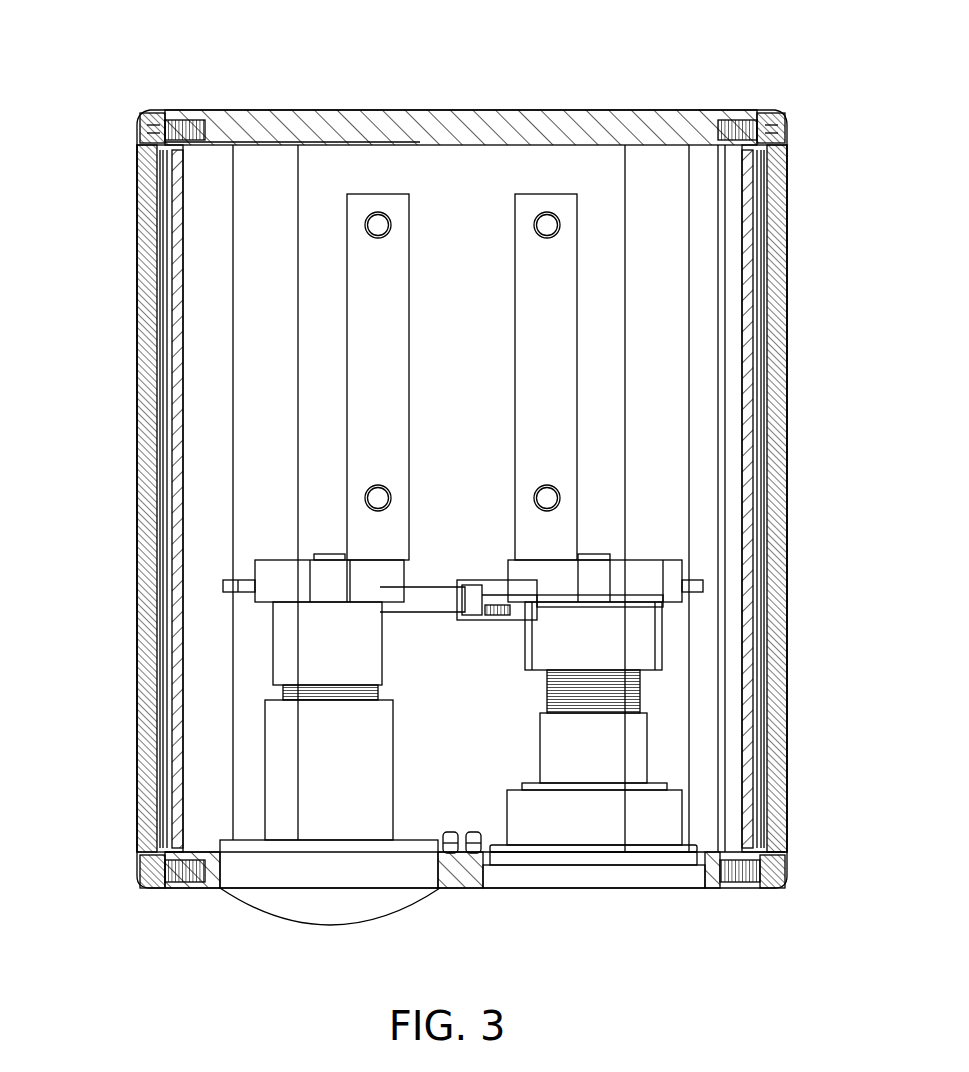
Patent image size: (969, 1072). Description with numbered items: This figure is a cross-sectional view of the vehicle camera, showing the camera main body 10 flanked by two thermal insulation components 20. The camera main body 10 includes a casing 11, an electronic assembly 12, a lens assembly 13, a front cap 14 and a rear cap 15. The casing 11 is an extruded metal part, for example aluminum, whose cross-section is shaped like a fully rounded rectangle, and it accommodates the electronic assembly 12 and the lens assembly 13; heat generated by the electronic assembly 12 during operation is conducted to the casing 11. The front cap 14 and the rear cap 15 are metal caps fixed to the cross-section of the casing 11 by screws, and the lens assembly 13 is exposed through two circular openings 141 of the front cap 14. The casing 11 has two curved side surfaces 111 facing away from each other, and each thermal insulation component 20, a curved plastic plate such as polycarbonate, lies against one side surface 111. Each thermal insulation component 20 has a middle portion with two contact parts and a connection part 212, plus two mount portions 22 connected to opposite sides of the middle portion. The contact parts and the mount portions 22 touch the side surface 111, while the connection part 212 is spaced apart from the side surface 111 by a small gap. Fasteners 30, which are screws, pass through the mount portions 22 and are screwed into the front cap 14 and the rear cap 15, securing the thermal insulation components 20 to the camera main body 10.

The camera main body 10 is at (588, 104).
The casing 11 is at (750, 350).
The side surface 111 is at (164, 466).
The electronic assembly 12 is at (505, 623).
The lens assembly 13 is at (585, 892).
The front cap 14 is at (458, 880).
The circular opening 141 is at (222, 892).
The rear cap 15 is at (500, 118).
The thermal insulation component 20 is at (134, 447).
The connection part 212 is at (147, 493).
The mount portion 22 is at (163, 118).
The fastener 30 is at (150, 120).